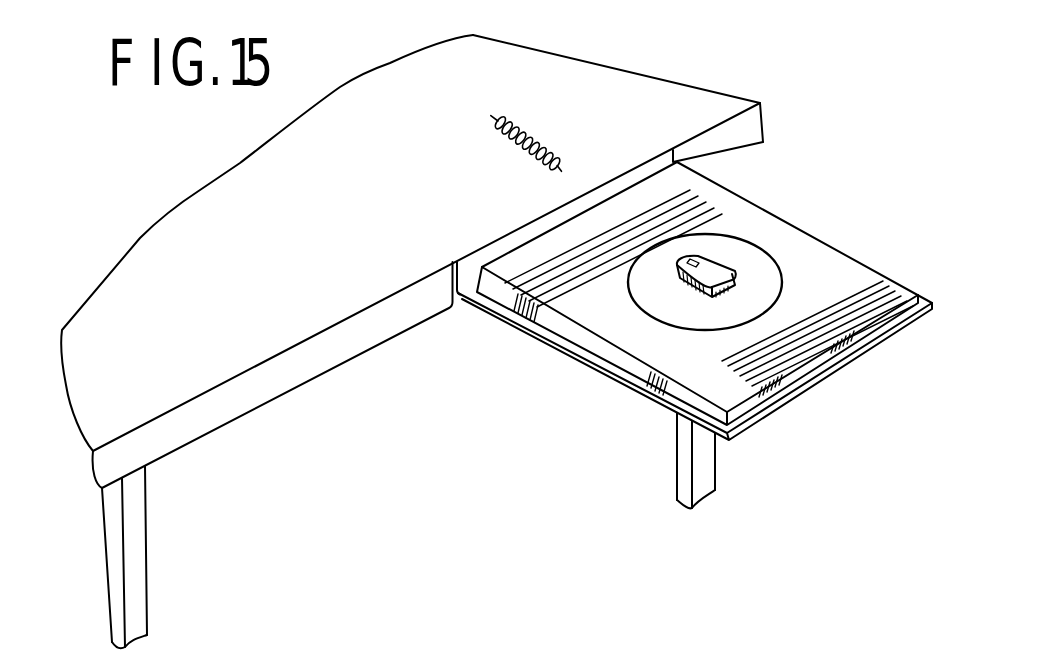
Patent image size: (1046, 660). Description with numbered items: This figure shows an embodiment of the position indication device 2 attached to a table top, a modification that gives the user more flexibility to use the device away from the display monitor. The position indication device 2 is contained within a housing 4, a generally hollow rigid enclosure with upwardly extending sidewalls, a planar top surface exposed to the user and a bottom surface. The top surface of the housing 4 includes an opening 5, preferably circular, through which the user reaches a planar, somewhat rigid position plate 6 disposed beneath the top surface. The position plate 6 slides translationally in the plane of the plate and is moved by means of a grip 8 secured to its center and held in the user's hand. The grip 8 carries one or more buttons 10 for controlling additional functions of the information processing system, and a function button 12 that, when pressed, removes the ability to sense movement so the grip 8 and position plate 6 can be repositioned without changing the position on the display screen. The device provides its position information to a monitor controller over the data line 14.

The position indication device 2 is at (738, 183).
The housing 4 is at (782, 212).
The opening 5 is at (765, 251).
The position plate 6 is at (765, 293).
The grip 8 is at (700, 290).
The buttons 10 is at (660, 273).
The function button 12 is at (677, 288).
The data line 14 is at (590, 212).